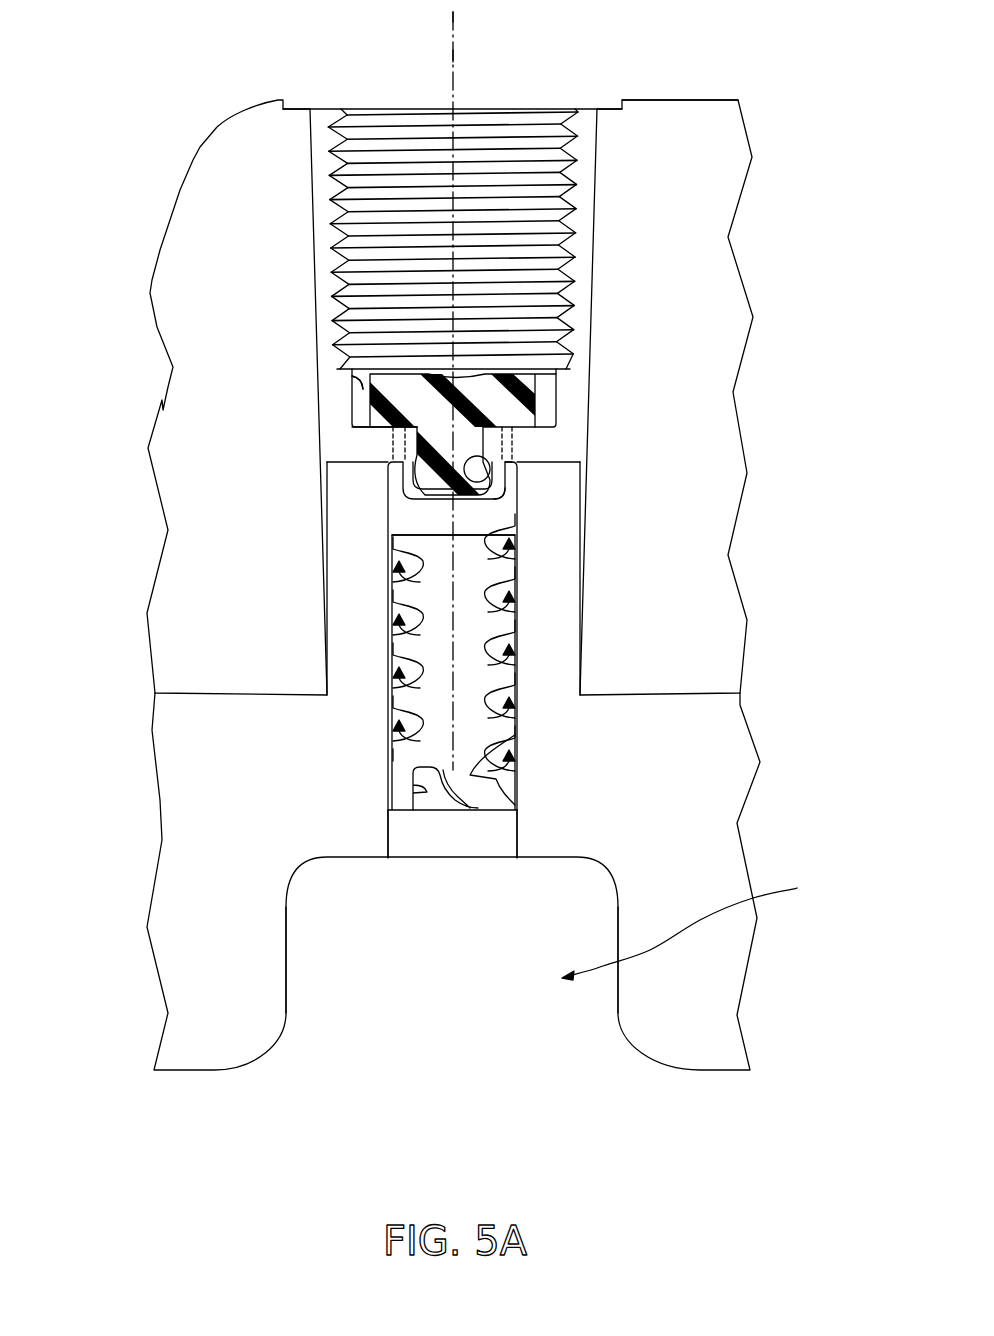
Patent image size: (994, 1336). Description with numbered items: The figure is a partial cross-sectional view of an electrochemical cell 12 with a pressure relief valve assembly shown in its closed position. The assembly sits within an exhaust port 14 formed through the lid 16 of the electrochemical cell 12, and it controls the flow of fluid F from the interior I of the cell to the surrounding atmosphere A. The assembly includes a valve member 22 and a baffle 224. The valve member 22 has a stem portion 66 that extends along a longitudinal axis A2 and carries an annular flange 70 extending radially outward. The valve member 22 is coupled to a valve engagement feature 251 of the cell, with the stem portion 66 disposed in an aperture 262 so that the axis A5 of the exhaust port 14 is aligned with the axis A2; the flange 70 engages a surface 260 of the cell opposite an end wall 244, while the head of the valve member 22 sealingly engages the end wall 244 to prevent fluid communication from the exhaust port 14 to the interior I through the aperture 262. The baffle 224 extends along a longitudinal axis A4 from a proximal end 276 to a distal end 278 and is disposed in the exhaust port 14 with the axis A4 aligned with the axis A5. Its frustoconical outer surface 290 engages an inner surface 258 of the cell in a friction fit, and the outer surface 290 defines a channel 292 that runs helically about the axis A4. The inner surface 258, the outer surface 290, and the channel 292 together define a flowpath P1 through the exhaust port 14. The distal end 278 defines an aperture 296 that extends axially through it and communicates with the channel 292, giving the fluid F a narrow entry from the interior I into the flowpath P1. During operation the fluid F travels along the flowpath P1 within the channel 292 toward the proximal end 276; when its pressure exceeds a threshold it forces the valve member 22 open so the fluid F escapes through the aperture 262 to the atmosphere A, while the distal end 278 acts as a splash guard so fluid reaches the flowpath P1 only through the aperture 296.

The electrochemical cell 12 is at (208, 935).
The exhaust port 14 is at (358, 389).
The lid 16 is at (698, 149).
The valve member 22 is at (518, 405).
The stem portion 66 is at (462, 447).
The annular flange 70 is at (517, 477).
The baffle 224 is at (403, 587).
The end wall 244 is at (355, 424).
The valve engagement feature 251 is at (400, 446).
The inner surface 258 is at (475, 528).
The surface 260 is at (388, 465).
The aperture 262 is at (500, 488).
The proximal end 276 is at (417, 535).
The distal end 278 is at (400, 840).
The outer surface 290 is at (395, 645).
The channel 292 is at (518, 643).
The aperture 296 is at (425, 788).
The flowpath P1 is at (395, 741).
The atmosphere A is at (660, 68).
The longitudinal axis A2 is at (453, 33).
The longitudinal axis A4 is at (453, 20).
The axis A5 is at (453, 58).
The fluid F is at (447, 952).
The interior I is at (685, 926).